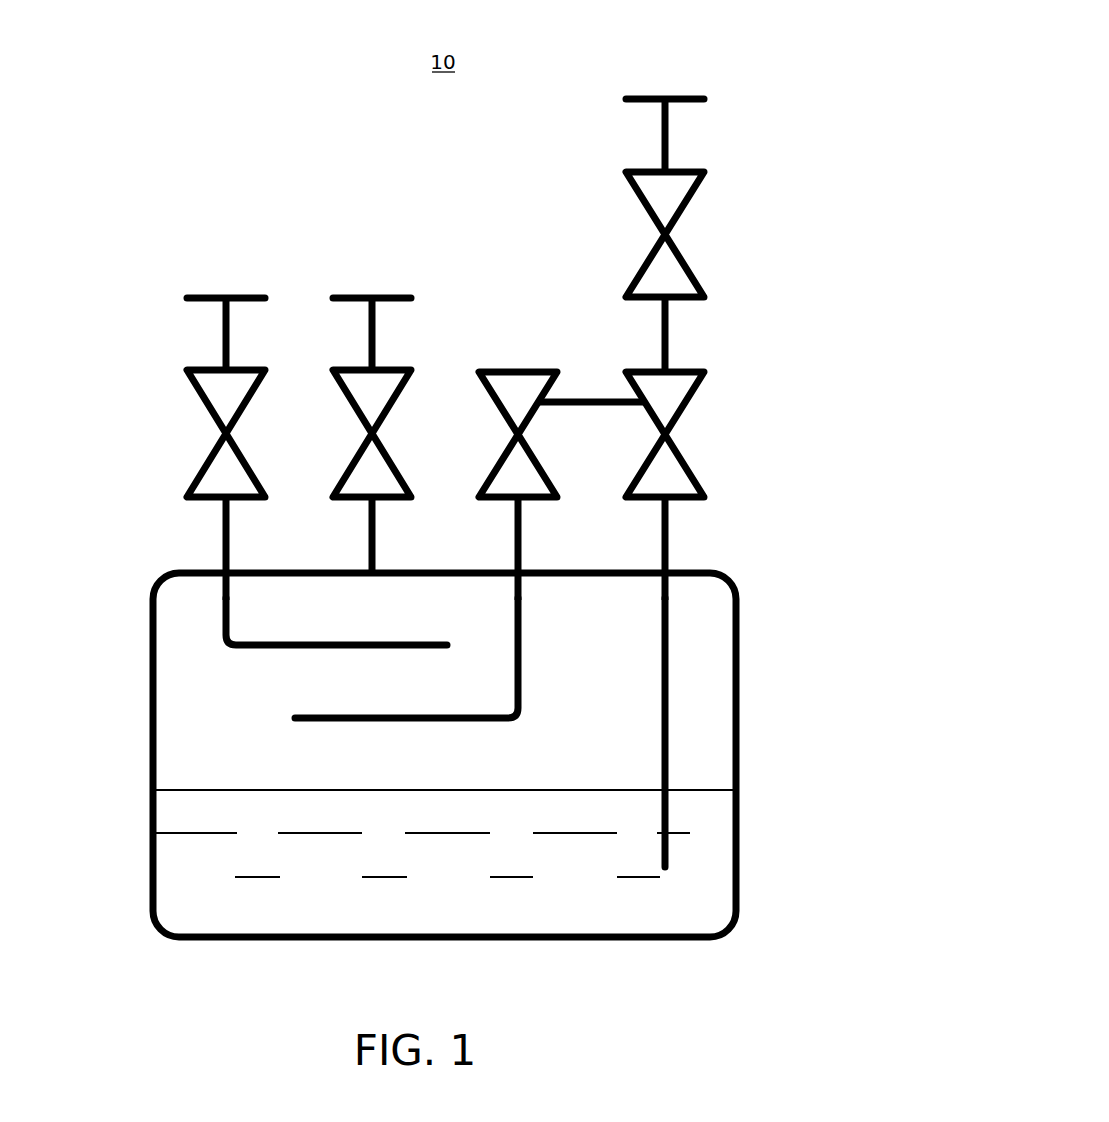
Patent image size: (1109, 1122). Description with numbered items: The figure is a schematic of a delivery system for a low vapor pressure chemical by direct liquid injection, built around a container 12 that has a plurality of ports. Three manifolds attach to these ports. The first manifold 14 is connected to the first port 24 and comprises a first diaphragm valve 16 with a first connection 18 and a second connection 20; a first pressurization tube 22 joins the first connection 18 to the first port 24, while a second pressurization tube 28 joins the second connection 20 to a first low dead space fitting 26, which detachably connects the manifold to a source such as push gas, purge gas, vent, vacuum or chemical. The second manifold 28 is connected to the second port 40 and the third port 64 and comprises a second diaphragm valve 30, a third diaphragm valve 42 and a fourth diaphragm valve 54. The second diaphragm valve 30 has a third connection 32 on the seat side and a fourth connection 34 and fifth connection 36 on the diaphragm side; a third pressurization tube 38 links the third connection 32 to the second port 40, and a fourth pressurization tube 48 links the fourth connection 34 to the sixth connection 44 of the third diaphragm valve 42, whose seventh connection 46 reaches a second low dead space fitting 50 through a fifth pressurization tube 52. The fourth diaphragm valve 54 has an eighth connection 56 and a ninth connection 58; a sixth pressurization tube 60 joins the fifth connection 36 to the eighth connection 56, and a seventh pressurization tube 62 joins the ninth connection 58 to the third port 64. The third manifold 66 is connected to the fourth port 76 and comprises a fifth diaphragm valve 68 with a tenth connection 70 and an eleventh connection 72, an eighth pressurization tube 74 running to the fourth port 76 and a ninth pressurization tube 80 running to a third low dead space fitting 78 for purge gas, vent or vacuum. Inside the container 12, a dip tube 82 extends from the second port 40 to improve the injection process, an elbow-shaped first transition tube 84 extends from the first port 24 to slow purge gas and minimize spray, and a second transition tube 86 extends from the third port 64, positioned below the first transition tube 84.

The container 12 is at (393, 755).
The first manifold 14 is at (134, 169).
The first diaphragm valve 16 is at (180, 433).
The first connection 18 is at (148, 515).
The second connection 20 is at (259, 355).
The first pressurization tube 22 is at (157, 535).
The first port 24 is at (193, 594).
The first low dead space fitting 26 is at (207, 269).
The second manifold 28 is at (532, 228).
The second diaphragm valve 30 is at (714, 434).
The third connection 32 is at (732, 531).
The fourth connection 34 is at (739, 359).
The fifth connection 36 is at (607, 446).
The third pressurization tube 38 is at (617, 535).
The second port 40 is at (623, 595).
The third diaphragm valve 42 is at (720, 234).
The sixth connection 44 is at (729, 317).
The seventh connection 46 is at (739, 151).
The fourth pressurization tube 48 is at (607, 328).
The second low dead space fitting 50 is at (712, 69).
The fifth pressurization tube 52 is at (596, 135).
The fourth diaphragm valve 54 is at (484, 434).
The eighth connection 56 is at (566, 429).
The ninth connection 58 is at (471, 516).
The sixth pressurization tube 60 is at (572, 368).
The seventh pressurization tube 62 is at (473, 535).
The third port 64 is at (473, 592).
The third manifold 66 is at (309, 169).
The fifth diaphragm valve 68 is at (343, 433).
The tenth connection 70 is at (326, 512).
The eleventh connection 72 is at (334, 359).
The eighth pressurization tube 74 is at (322, 535).
The fourth port 76 is at (332, 593).
The third low dead space fitting 78 is at (352, 267).
The ninth pressurization tube 80 is at (330, 334).
The dip tube 82 is at (617, 732).
The first transition tube 84 is at (301, 642).
The second transition tube 86 is at (441, 658).